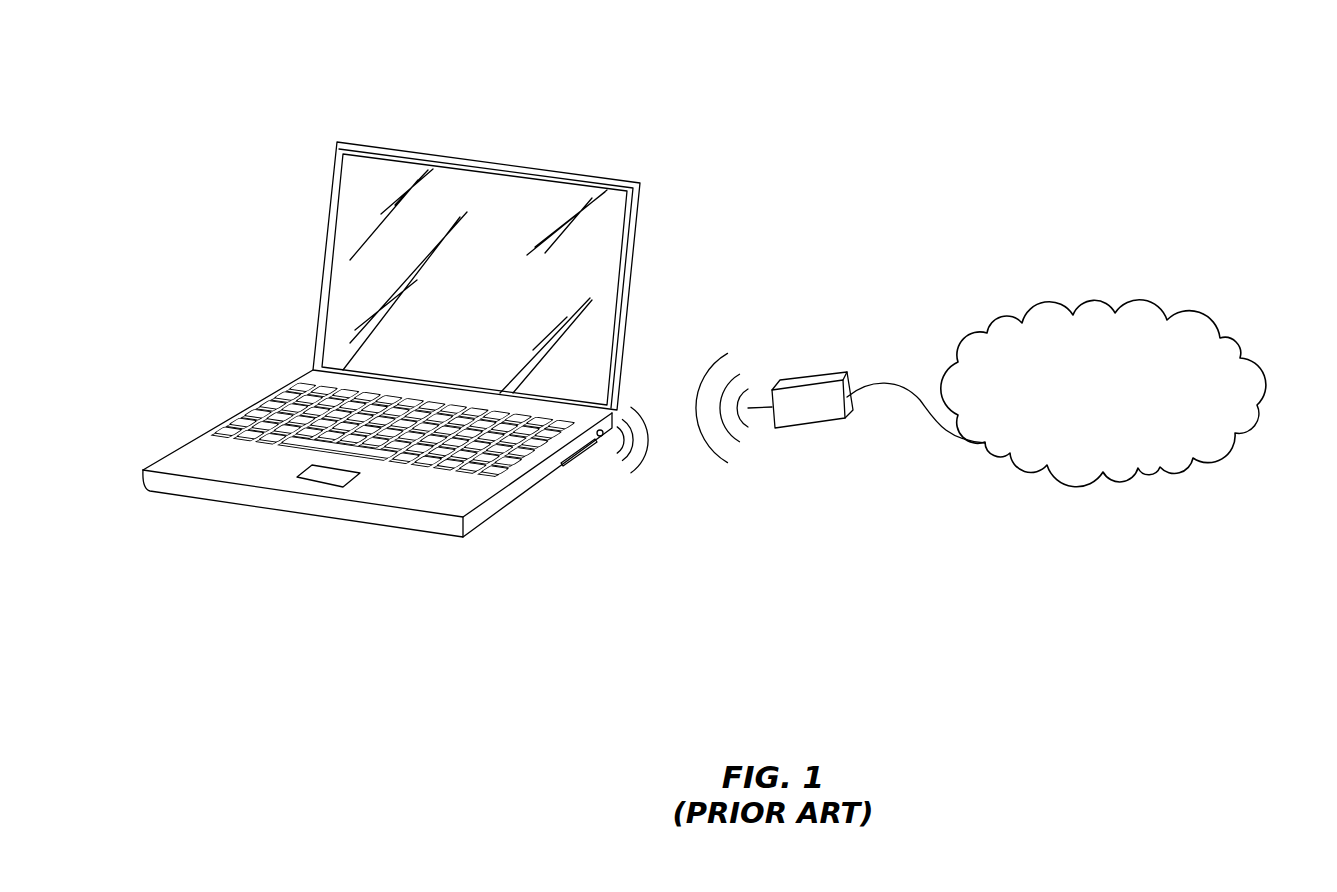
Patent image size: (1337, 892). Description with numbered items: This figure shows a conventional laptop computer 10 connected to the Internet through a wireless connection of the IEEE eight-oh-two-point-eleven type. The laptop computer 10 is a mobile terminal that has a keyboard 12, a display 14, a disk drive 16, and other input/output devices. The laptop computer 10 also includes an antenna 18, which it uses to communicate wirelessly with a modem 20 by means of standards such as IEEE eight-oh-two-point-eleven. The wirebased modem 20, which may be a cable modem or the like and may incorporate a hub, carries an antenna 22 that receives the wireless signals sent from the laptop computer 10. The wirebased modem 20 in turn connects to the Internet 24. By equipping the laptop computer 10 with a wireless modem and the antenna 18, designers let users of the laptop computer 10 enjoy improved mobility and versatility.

The laptop computer 10 is at (682, 126).
The keyboard 12 is at (497, 462).
The display 14 is at (475, 187).
The disk drive 16 is at (573, 462).
The antenna 18 is at (604, 437).
The modem 20 is at (817, 375).
The antenna 22 is at (755, 408).
The Internet 24 is at (1223, 337).